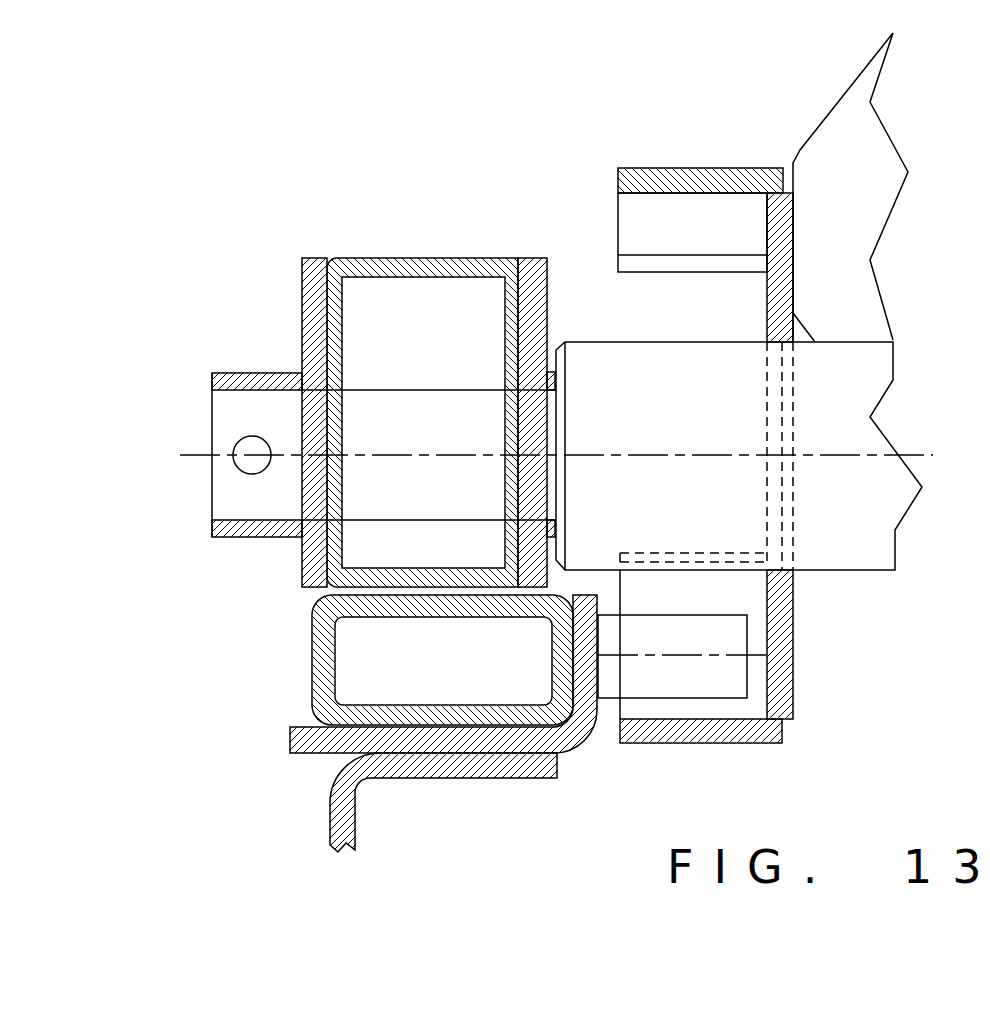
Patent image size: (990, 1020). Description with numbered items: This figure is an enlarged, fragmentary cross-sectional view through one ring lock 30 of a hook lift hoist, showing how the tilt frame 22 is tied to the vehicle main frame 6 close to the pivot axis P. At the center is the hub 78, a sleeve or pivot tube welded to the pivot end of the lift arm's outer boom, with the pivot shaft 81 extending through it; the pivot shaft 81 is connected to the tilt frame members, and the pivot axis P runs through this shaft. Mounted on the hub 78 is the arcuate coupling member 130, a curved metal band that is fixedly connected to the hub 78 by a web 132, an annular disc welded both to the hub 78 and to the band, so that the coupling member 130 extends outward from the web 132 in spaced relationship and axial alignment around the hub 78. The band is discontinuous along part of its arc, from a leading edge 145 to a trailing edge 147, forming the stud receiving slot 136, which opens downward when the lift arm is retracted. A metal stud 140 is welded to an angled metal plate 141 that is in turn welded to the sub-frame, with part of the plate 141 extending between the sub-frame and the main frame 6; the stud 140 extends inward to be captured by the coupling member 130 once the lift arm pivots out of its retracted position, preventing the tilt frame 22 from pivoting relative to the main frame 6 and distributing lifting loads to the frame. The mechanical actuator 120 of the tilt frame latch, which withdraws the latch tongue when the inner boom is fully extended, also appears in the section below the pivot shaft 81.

The main frame 6 is at (330, 810).
The tilt frame 22 is at (368, 258).
The ring lock 30 is at (587, 166).
The hub 78 is at (867, 337).
The pivot shaft 81 is at (222, 420).
The mechanical actuator 120 is at (312, 658).
The arcuate coupling member 130 is at (702, 168).
The web 132 is at (797, 257).
The stud receiving slot 136 is at (687, 315).
The stud 140 is at (703, 687).
The angled metal plate 141 is at (290, 737).
The leading edge 145 is at (723, 550).
The trailing edge 147 is at (657, 272).
The pivot axis P is at (197, 457).